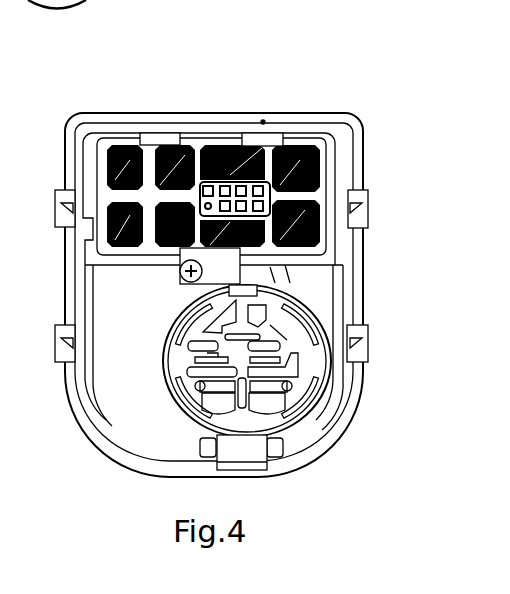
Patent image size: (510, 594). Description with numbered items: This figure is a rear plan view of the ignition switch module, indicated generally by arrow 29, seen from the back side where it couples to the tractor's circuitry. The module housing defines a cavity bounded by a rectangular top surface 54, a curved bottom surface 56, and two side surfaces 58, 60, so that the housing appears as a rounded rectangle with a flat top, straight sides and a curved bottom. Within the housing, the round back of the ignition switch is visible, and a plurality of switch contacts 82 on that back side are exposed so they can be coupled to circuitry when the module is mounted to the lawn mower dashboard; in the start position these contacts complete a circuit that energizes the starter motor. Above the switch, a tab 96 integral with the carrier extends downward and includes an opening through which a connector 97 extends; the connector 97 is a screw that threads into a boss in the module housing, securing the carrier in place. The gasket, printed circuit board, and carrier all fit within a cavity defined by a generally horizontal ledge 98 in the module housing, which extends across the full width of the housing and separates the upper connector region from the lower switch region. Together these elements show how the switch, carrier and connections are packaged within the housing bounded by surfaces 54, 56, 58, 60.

The electrical center assembly 29 is at (320, 80).
The rectangular top surface 54 is at (222, 110).
The curved bottom surface 56 is at (115, 445).
The side surface 58 is at (77, 277).
The side surface 60 is at (347, 278).
The switch contacts 82 is at (288, 437).
The tab 96 is at (222, 253).
The connector 97 is at (180, 278).
The horizontal ledge 98 is at (272, 268).